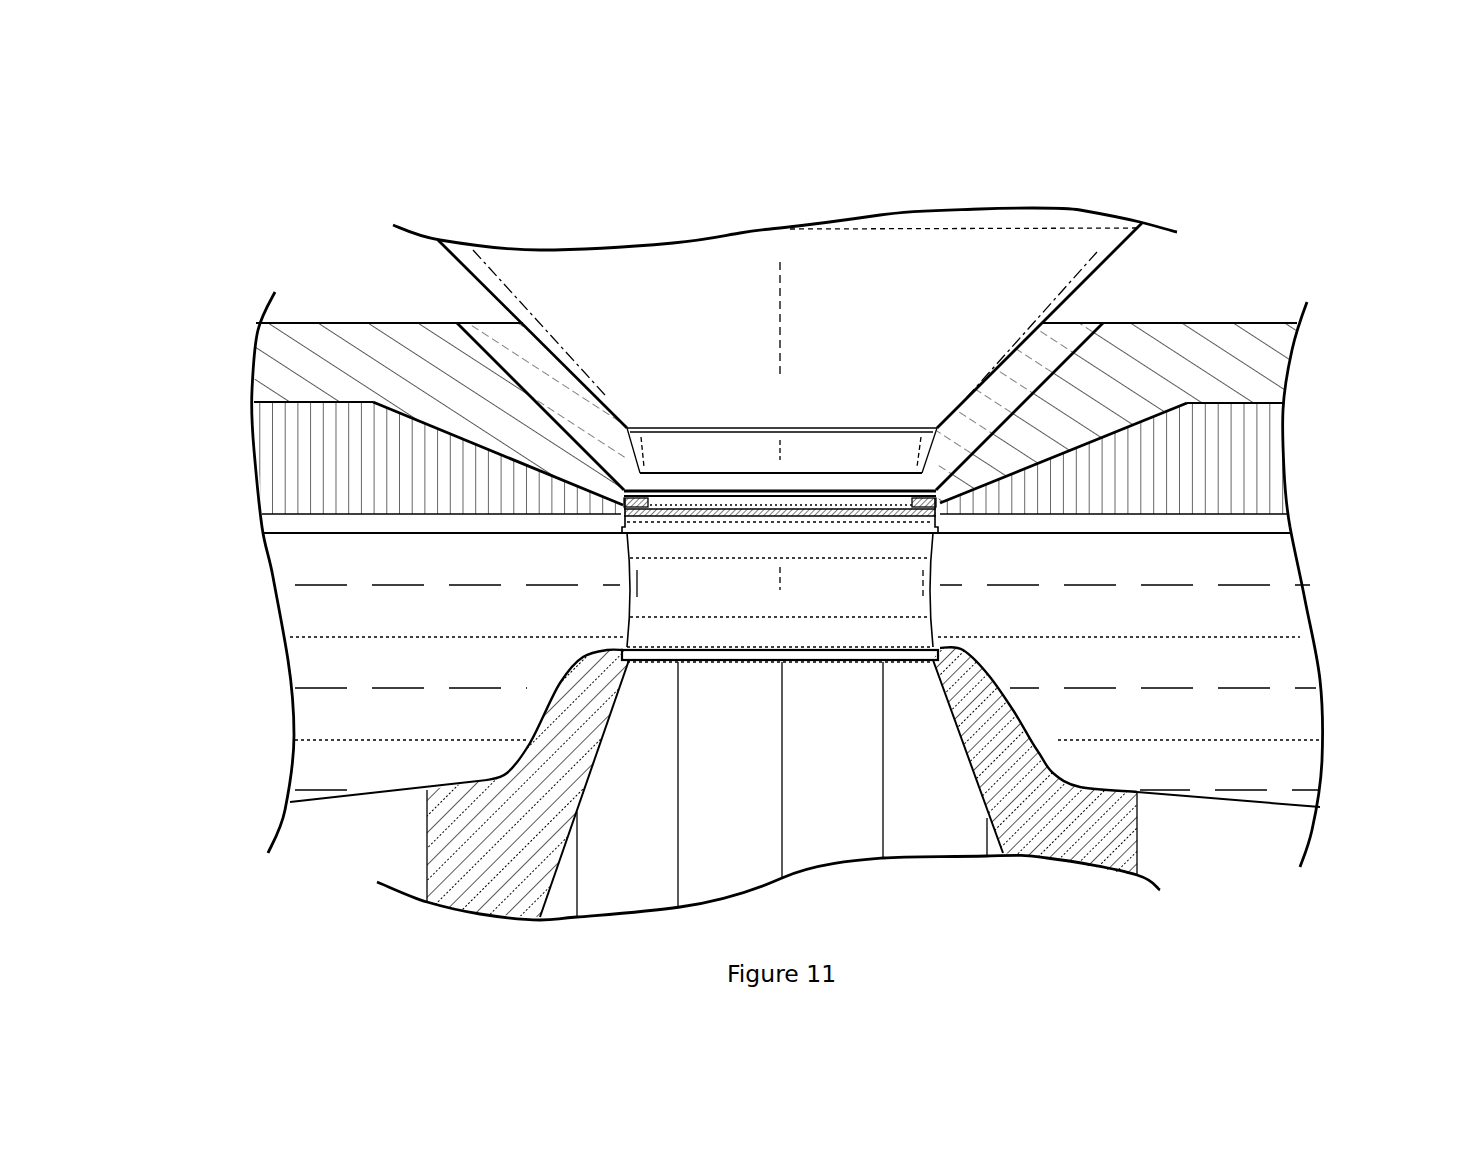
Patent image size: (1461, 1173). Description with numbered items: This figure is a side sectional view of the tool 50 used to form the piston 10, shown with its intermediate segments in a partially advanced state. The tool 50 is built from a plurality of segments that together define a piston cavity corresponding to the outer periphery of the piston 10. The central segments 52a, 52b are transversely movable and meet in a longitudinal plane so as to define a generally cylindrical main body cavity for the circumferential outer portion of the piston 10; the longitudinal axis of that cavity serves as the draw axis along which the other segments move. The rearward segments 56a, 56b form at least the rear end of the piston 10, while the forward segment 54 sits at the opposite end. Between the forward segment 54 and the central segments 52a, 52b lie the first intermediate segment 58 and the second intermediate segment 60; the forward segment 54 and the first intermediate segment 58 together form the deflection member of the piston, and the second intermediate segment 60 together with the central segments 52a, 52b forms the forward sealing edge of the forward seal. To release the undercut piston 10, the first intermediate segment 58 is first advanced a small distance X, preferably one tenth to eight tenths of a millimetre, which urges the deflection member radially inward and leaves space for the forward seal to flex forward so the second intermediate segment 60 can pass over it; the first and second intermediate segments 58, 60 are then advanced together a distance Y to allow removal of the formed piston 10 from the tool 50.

The tool 50 is at (200, 140).
The forward segment 54 is at (1063, 207).
The piston 10 is at (815, 494).
The first intermediate segment 58 is at (1287, 370).
The second intermediate segment 60 is at (1285, 462).
The distance X is at (1282, 400).
The distance Y is at (1292, 520).
The central segment 52a is at (285, 650).
The central segment 52b is at (1320, 633).
The rearward segment 56a is at (1033, 856).
The rearward segment 56b is at (900, 860).